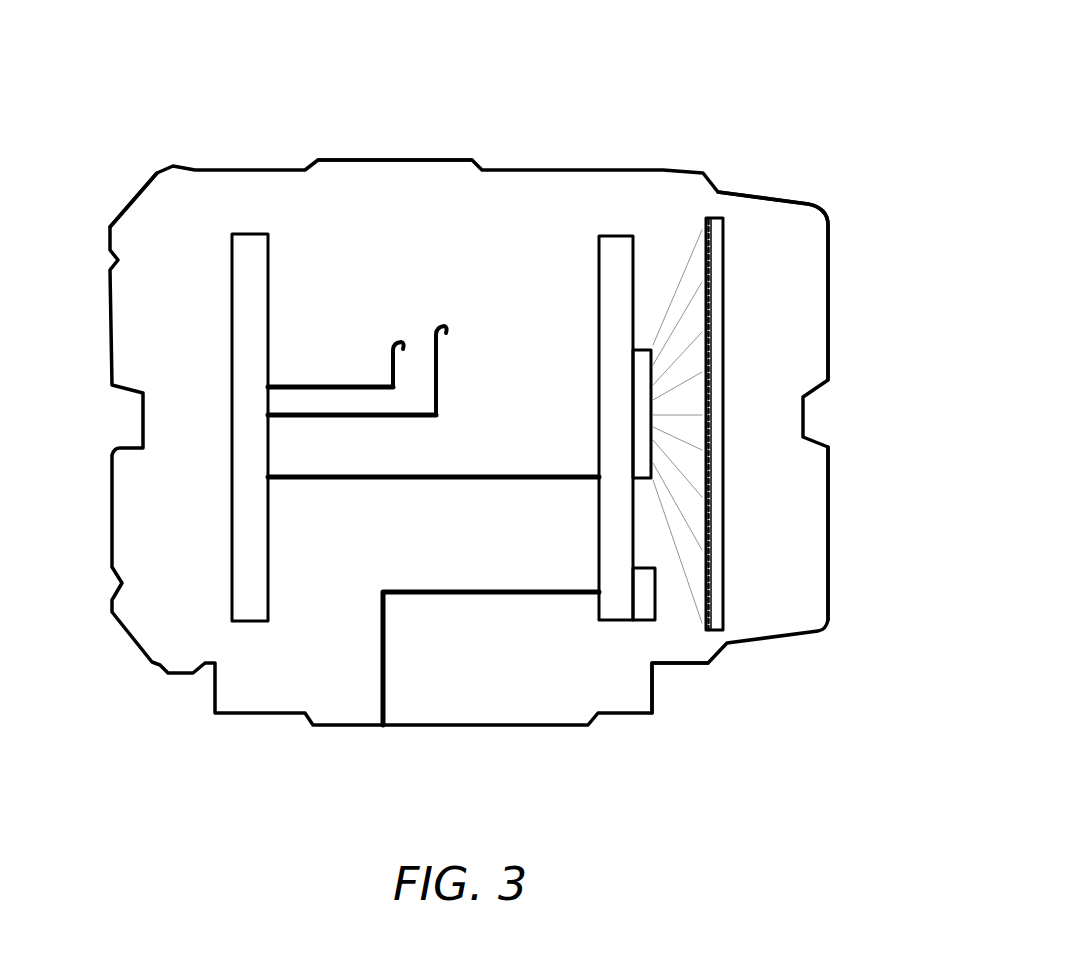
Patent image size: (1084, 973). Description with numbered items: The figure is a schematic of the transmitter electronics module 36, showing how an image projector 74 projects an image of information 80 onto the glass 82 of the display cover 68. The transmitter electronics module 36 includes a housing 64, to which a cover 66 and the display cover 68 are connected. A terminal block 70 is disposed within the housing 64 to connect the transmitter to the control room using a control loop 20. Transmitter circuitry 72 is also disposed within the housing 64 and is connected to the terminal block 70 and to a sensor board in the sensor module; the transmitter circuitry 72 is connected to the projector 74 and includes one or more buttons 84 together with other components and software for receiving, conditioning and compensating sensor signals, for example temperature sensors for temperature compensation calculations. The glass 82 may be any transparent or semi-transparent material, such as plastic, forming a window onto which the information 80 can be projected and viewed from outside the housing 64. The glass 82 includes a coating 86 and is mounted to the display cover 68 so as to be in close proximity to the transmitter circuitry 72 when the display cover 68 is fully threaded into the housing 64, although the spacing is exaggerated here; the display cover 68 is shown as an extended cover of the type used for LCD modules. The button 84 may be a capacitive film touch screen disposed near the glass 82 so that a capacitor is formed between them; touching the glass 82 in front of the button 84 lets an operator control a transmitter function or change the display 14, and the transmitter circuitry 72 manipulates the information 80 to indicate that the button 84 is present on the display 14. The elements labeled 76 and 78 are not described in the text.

The display 14 is at (762, 456).
The control loop 20 is at (460, 378).
The transmitter electronics module 36 is at (538, 103).
The housing 64 is at (392, 205).
The cover 66 is at (160, 187).
The display cover 68 is at (777, 223).
The terminal block 70 is at (252, 240).
The transmitter circuitry 72 is at (610, 303).
The image projector 74 is at (642, 350).
The bus bar 76 is at (383, 697).
The connecting bar 78 is at (465, 480).
The information 80 is at (680, 242).
The glass 82 is at (725, 347).
The button 84 is at (645, 620).
The coating 86 is at (705, 624).